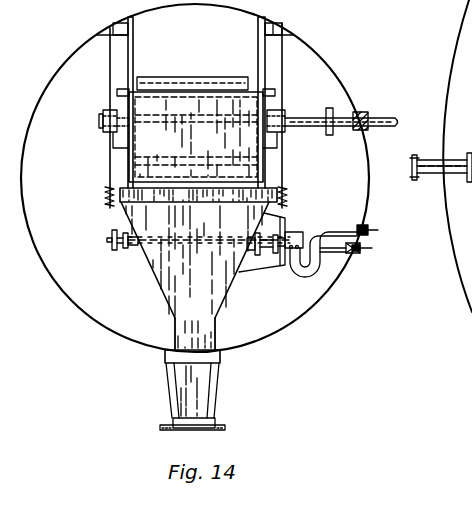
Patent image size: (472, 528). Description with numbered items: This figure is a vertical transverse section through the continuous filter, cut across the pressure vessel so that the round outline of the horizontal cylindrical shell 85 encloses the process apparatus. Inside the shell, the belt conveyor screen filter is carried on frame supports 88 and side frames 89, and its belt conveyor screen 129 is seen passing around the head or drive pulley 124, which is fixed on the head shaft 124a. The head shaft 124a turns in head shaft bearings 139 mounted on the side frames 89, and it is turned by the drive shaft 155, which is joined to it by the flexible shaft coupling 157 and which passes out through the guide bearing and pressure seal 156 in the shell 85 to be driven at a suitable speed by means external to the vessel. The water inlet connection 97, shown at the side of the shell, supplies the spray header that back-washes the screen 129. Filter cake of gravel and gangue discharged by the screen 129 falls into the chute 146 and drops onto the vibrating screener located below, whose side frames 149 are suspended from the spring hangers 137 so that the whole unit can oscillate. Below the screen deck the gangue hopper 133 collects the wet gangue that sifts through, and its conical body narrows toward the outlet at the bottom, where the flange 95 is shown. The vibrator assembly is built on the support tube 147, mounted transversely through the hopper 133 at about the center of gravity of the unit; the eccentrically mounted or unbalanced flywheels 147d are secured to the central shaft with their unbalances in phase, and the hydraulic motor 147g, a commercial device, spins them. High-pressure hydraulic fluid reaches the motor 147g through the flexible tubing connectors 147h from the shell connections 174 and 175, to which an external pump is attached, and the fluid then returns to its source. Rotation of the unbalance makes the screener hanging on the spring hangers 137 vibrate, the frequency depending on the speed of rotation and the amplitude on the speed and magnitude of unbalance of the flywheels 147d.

The horizontal cylindrical shell 85 is at (316, 53).
The frame supports 88 is at (143, 33).
The side frames 89 is at (126, 90).
The belt conveyor screen 129 is at (155, 62).
The head or drive pulley 124 is at (247, 78).
The head shaft 124a is at (288, 125).
The spring hangers 137 is at (109, 97).
The head shaft bearings 139 is at (103, 128).
The chute 146 is at (128, 172).
The side frames 149 is at (279, 189).
The guide bearing and pressure seal 156 is at (369, 110).
The drive shaft 155 is at (379, 122).
The flexible shaft coupling 157 is at (331, 136).
The support tube 147 is at (192, 243).
The unbalanced flywheels 147d is at (126, 263).
The hydraulic motor 147g is at (293, 233).
The flexible tubing connectors 147h is at (293, 278).
The shell connection 174 is at (368, 229).
The shell connection 175 is at (359, 252).
The gangue hopper 133 is at (216, 327).
The outlet flange 95 is at (220, 423).
The water inlet connection 97 is at (420, 180).